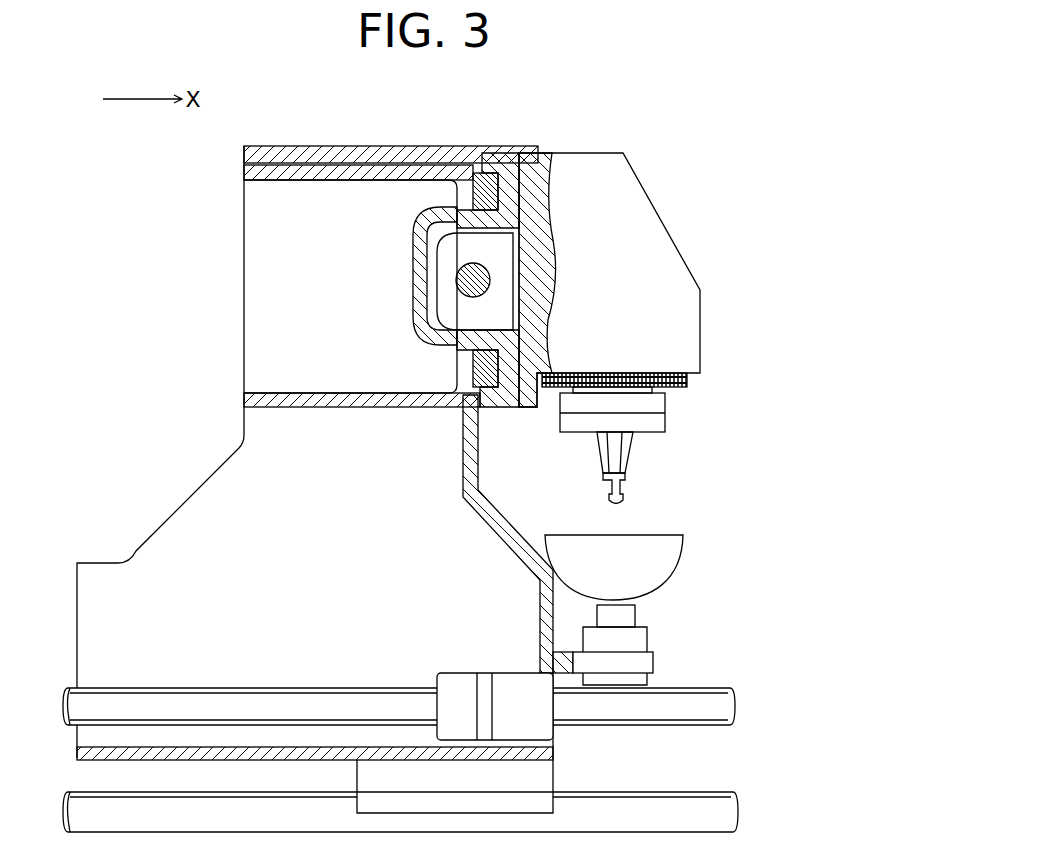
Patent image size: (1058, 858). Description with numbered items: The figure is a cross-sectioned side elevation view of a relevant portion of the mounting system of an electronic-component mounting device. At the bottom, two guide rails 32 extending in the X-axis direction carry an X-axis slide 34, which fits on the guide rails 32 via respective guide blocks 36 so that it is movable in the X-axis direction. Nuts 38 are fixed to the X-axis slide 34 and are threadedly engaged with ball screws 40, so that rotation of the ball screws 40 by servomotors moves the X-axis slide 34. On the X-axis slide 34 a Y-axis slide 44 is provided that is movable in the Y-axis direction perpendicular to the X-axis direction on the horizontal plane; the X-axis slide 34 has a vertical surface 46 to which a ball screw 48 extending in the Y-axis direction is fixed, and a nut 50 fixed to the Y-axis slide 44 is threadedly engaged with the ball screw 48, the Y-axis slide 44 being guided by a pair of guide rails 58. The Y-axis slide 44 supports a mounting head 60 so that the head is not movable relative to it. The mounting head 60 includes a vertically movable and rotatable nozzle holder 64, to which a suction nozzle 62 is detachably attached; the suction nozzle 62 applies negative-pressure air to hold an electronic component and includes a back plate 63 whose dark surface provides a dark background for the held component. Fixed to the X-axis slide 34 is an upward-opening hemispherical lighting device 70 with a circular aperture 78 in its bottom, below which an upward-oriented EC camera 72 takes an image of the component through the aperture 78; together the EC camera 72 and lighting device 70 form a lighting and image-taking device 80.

The guide rails 32 is at (700, 803).
The X-axis slide 34 is at (366, 141).
The guide blocks 36 is at (543, 786).
The nuts 38 is at (543, 727).
The ball screws 40 is at (669, 712).
The Y-axis slide 44 is at (527, 396).
The vertical surface 46 is at (480, 458).
The ball screw 48 is at (460, 286).
The nut 50 is at (446, 264).
The guide rails 58 is at (488, 178).
The mounting head 60 is at (648, 234).
The suction nozzle 62 is at (638, 473).
The back plate 63 is at (653, 423).
The nozzle holder 64 is at (567, 402).
The lighting device 70 is at (699, 567).
The EC camera 72 is at (656, 628).
The circular aperture 78 is at (615, 605).
The lighting and image-taking device 80 is at (722, 610).